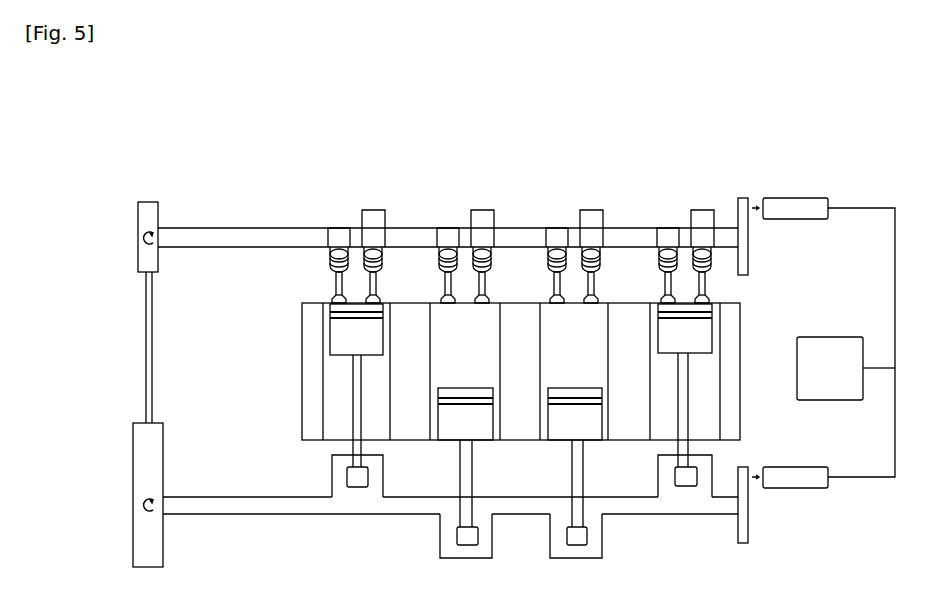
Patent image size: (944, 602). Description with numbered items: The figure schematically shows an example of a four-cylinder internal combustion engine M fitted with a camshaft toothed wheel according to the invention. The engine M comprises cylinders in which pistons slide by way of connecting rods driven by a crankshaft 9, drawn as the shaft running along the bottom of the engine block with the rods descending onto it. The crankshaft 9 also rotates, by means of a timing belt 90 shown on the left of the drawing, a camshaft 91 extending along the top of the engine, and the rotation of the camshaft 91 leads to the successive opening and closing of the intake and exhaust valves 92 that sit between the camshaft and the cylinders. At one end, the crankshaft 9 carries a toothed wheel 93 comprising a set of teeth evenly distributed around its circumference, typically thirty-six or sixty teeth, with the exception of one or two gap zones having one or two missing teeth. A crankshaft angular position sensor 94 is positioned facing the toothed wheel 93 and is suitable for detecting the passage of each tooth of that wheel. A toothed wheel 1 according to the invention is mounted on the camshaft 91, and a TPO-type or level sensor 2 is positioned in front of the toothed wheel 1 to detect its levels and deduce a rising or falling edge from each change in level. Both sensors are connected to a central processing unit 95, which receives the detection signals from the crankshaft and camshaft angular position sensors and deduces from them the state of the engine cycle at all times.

The engine M is at (124, 184).
The toothed wheel 1 is at (737, 206).
The level sensor 2 is at (797, 205).
The crankshaft 9 is at (250, 507).
The timing belt 90 is at (147, 331).
The camshaft 91 is at (258, 237).
The intake and exhaust valves 92 is at (372, 223).
The toothed wheel 93 is at (746, 530).
The crankshaft angular position sensor 94 is at (798, 480).
The central processing unit 95 is at (846, 368).